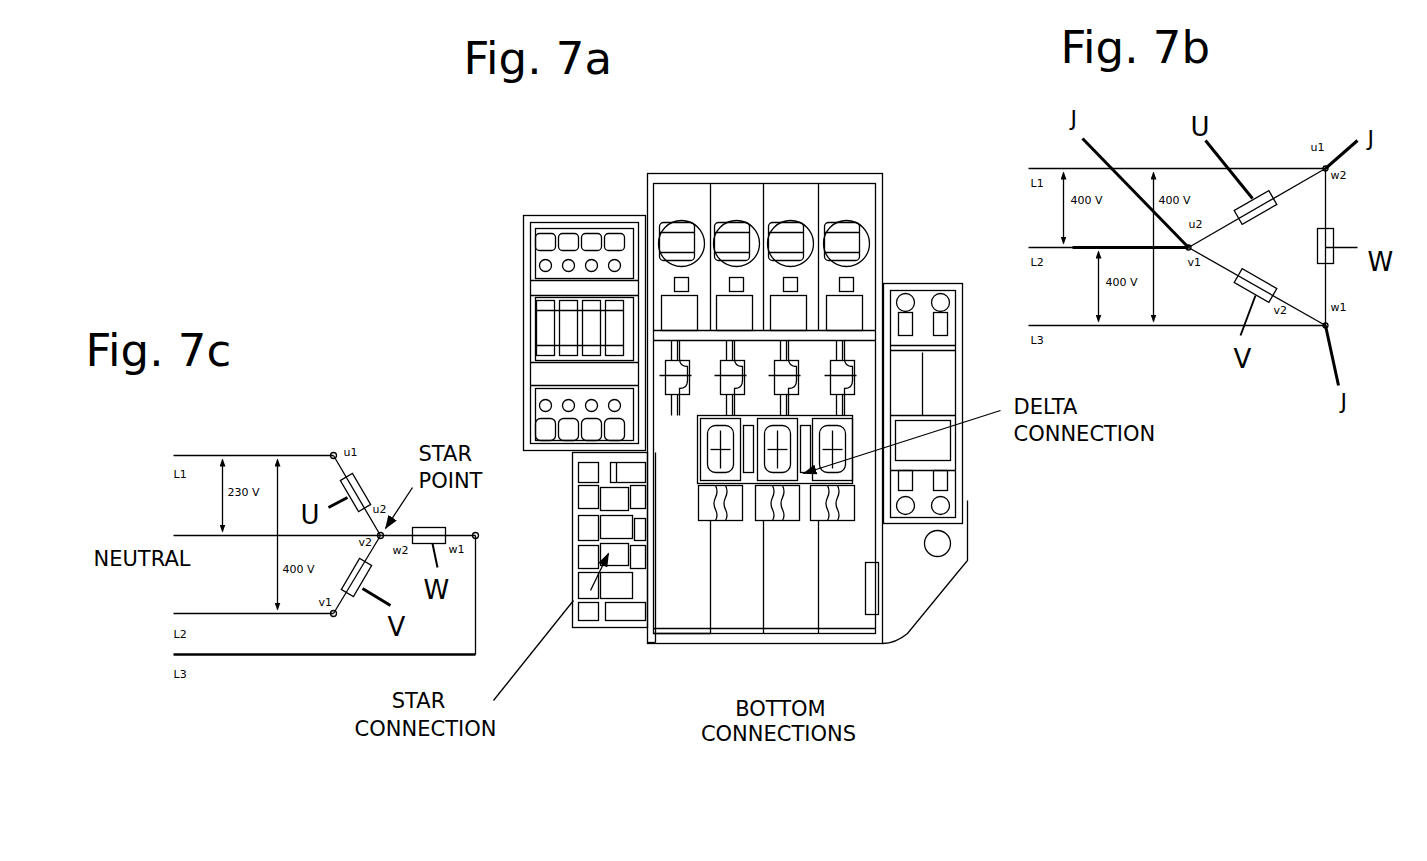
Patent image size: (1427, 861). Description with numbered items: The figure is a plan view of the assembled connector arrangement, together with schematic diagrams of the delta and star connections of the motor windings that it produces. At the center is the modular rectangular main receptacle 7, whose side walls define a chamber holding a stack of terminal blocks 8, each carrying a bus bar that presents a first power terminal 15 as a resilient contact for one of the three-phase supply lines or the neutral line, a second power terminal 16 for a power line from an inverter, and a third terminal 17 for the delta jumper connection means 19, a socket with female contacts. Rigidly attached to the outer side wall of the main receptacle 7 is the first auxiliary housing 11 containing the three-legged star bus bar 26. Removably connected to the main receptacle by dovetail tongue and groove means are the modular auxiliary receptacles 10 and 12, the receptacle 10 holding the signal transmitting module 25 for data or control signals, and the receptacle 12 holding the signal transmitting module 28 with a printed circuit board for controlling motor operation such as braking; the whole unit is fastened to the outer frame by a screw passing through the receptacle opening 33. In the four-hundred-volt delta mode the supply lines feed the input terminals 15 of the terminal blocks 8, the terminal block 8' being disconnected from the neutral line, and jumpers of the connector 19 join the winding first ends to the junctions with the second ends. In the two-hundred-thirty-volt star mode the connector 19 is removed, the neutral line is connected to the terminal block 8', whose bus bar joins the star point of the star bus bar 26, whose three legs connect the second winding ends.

The main receptacle 7 is at (860, 643).
The terminal blocks 8 is at (834, 427).
The fourth terminal block 8' is at (662, 665).
The auxiliary housing receptacle 10 is at (525, 373).
The first auxiliary housing 11 is at (575, 530).
The auxiliary housing receptacle 12 is at (925, 280).
The first power terminal 15 is at (660, 217).
The second power terminal 16 is at (677, 370).
The third terminal 17 is at (838, 440).
The delta jumper connection means 19 is at (857, 483).
The signal transmitting module 25 is at (575, 268).
The star bus bar 26 is at (609, 600).
The signal transmitting module 28 is at (942, 345).
The receptacle opening 33 is at (937, 543).